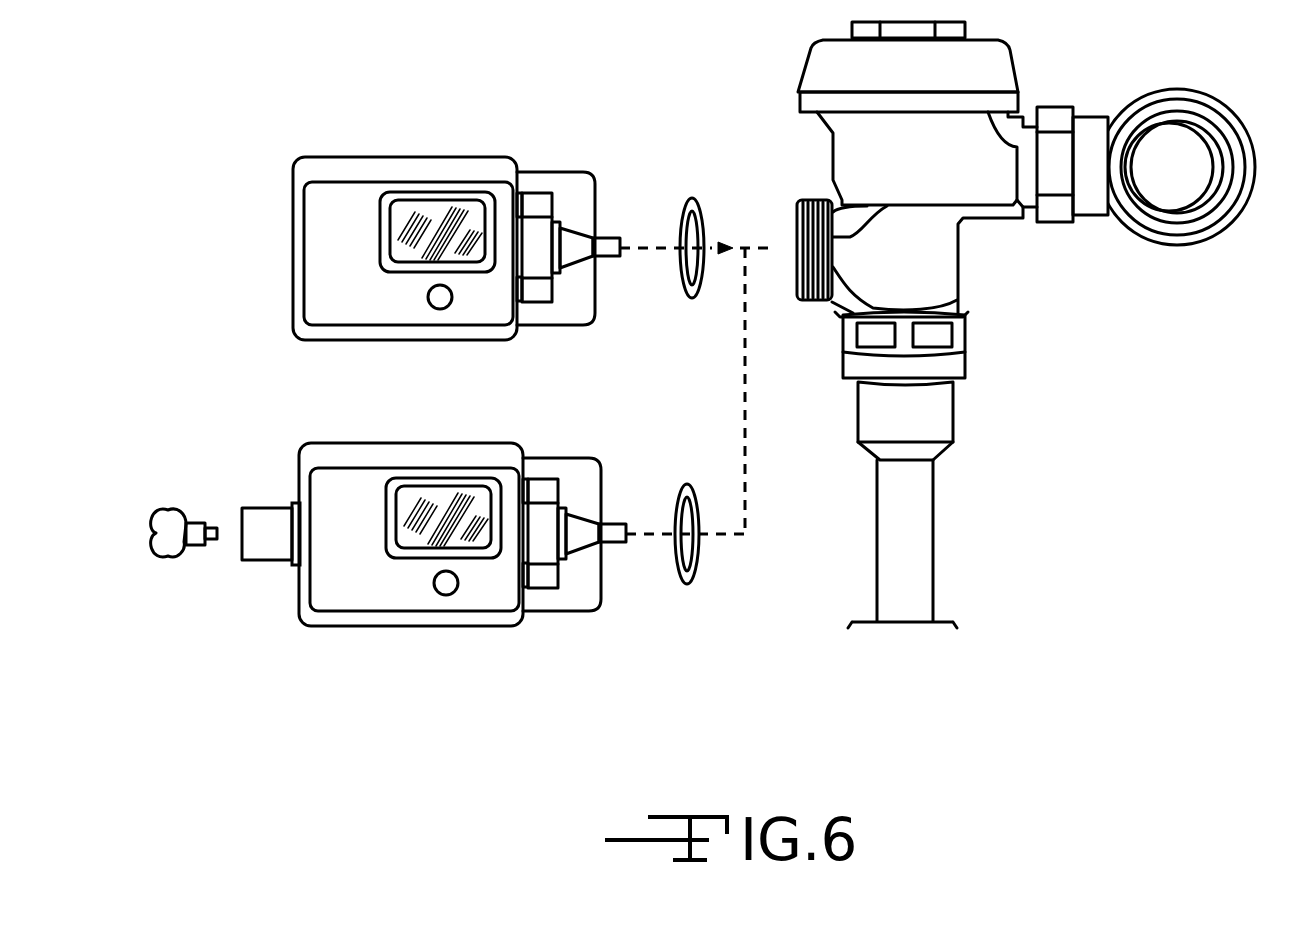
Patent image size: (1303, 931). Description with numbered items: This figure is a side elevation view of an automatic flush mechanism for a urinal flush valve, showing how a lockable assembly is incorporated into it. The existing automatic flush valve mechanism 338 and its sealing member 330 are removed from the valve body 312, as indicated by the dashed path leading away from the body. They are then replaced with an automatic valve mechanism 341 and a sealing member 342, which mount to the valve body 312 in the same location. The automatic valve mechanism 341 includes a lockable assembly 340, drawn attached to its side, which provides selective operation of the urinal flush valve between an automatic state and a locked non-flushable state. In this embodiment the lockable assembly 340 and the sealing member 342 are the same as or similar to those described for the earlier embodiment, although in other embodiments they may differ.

The valve body 312 is at (960, 256).
The sealing member 330 is at (691, 199).
The automatic flush valve mechanism 338 is at (445, 157).
The lockable assembly 340 is at (268, 562).
The automatic valve mechanism 341 is at (420, 626).
The sealing member 342 is at (686, 585).